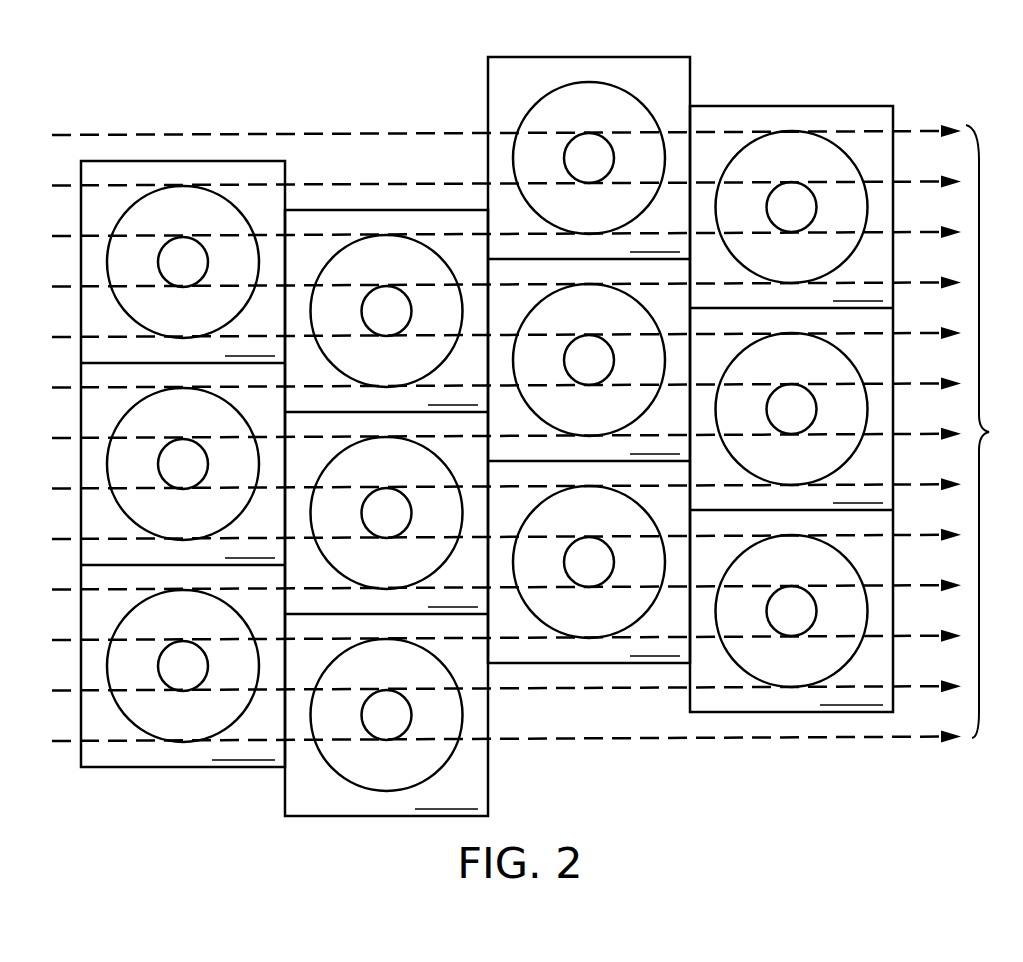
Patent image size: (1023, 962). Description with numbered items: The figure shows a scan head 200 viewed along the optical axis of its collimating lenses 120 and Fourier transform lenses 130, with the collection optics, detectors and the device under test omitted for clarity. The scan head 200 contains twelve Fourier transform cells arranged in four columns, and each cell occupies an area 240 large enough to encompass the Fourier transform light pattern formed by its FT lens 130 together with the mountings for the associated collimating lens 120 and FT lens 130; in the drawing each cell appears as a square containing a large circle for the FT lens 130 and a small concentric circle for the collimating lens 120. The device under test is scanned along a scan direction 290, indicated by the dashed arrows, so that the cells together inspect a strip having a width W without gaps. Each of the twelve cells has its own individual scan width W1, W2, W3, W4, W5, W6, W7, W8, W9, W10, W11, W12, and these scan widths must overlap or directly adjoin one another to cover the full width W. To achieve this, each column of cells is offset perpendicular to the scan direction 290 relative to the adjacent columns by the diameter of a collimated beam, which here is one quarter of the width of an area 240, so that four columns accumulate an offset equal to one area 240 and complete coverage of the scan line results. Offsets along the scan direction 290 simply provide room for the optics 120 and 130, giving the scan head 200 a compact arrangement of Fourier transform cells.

The scan head 200 is at (264, 64).
The area 240 is at (110, 161).
The FT lens 130 is at (118, 220).
The collimating lens 120 is at (158, 261).
The scan direction 290 is at (936, 741).
The width W is at (992, 431).
The scan width W1 is at (506, 143).
The scan width W2 is at (506, 194).
The scan width W3 is at (506, 244).
The scan width W4 is at (506, 294).
The scan width W5 is at (506, 345).
The scan width W6 is at (506, 395).
The scan width W7 is at (506, 446).
The scan width W8 is at (506, 496).
The scan width W9 is at (506, 547).
The scan width W10 is at (508, 597).
The scan width W11 is at (508, 648).
The scan width W12 is at (508, 698).